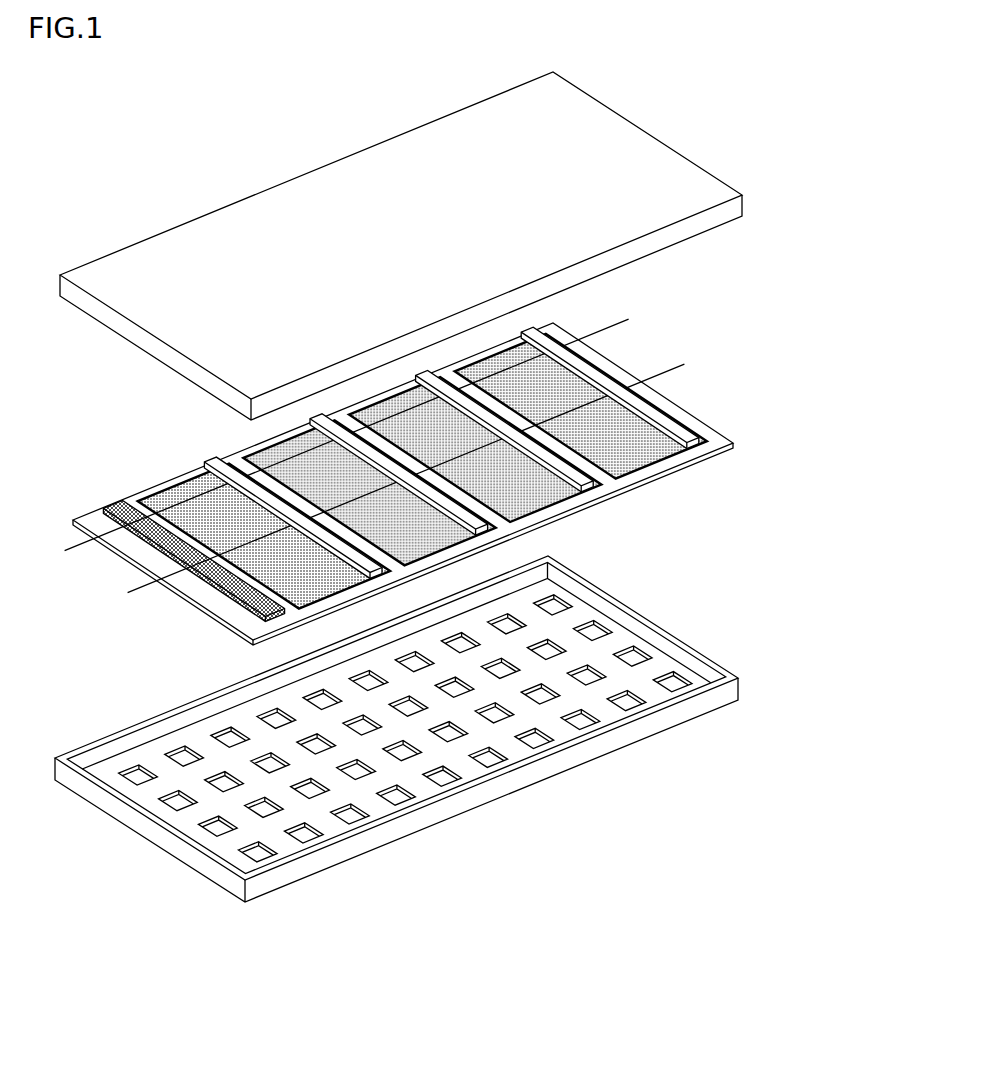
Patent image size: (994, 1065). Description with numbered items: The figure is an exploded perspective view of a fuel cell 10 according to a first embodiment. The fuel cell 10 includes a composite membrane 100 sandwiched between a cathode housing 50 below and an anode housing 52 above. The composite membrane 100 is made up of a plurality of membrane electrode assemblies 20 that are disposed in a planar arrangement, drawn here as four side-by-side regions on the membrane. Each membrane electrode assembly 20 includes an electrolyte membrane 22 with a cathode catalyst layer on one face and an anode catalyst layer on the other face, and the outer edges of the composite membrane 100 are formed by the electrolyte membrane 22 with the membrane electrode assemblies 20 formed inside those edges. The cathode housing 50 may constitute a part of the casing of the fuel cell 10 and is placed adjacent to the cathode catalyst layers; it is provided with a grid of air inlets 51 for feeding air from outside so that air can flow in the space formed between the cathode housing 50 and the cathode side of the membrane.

The fuel cell 10 is at (426, 729).
The membrane electrode assembly 20 is at (580, 495).
The electrolyte membrane 22 is at (677, 415).
The cathode housing 50 is at (660, 667).
The air inlet 51 is at (541, 694).
The anode housing 52 is at (627, 203).
The composite membrane 100 is at (461, 468).